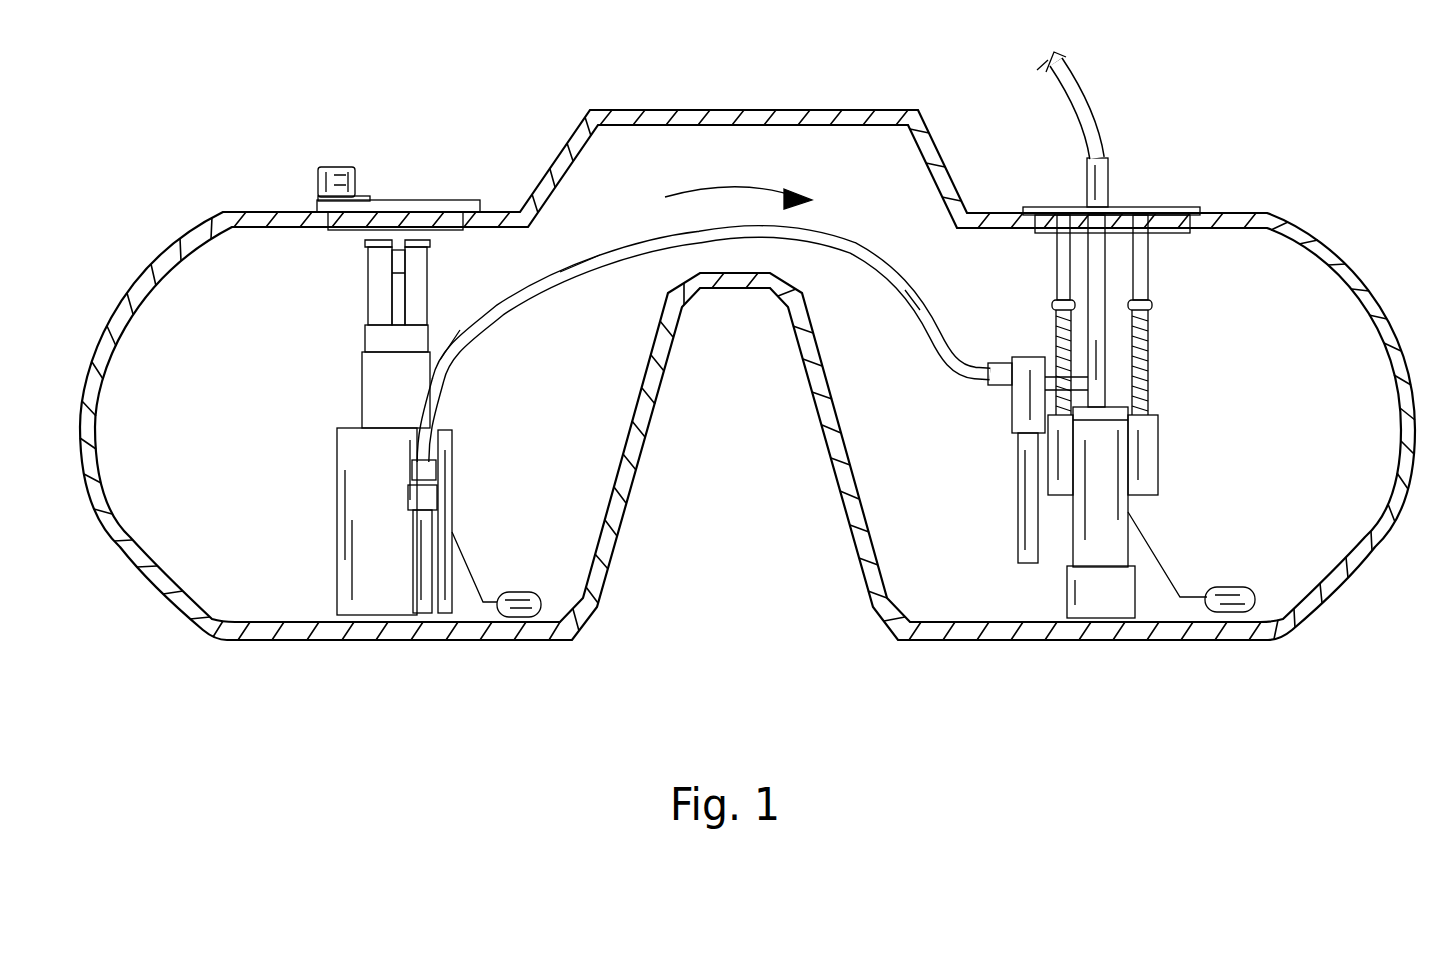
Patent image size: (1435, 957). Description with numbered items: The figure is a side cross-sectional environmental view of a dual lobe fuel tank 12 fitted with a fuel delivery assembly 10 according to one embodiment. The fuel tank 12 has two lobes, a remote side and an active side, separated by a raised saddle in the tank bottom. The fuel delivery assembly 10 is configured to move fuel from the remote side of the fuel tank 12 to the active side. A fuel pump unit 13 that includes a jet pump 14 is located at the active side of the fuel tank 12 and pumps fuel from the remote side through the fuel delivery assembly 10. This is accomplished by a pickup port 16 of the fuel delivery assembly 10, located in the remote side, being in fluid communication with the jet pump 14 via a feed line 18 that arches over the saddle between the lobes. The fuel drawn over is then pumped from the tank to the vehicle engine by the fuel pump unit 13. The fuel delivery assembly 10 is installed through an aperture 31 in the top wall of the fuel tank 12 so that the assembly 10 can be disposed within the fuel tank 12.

The fuel delivery assembly 10 is at (386, 476).
The dual lobe fuel tank 12 is at (152, 240).
The fuel pump unit 13 is at (1170, 405).
The jet pump 14 is at (1023, 387).
The pickup port 16 is at (418, 537).
The feed line 18 is at (833, 238).
The aperture 31 is at (462, 217).